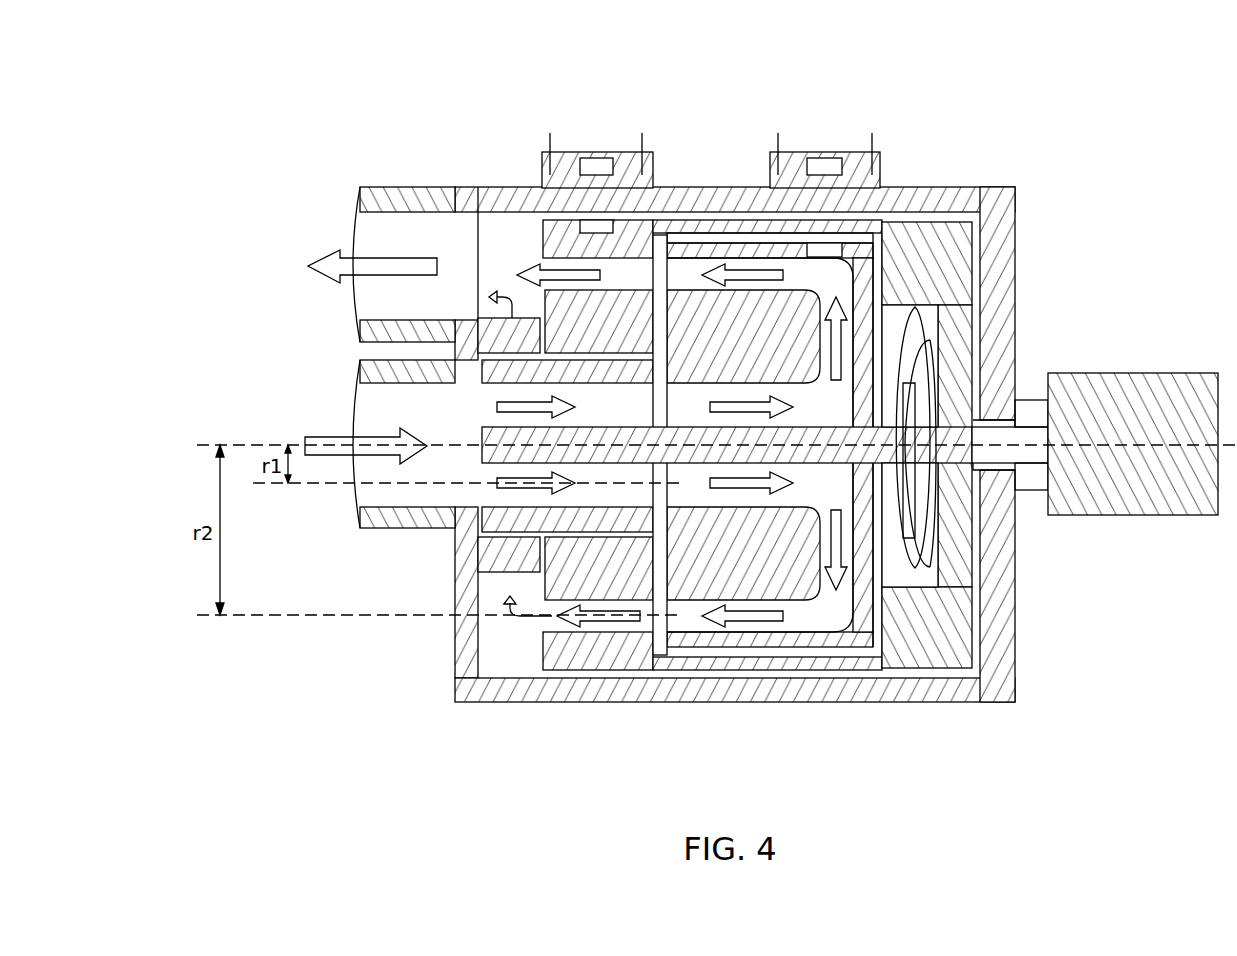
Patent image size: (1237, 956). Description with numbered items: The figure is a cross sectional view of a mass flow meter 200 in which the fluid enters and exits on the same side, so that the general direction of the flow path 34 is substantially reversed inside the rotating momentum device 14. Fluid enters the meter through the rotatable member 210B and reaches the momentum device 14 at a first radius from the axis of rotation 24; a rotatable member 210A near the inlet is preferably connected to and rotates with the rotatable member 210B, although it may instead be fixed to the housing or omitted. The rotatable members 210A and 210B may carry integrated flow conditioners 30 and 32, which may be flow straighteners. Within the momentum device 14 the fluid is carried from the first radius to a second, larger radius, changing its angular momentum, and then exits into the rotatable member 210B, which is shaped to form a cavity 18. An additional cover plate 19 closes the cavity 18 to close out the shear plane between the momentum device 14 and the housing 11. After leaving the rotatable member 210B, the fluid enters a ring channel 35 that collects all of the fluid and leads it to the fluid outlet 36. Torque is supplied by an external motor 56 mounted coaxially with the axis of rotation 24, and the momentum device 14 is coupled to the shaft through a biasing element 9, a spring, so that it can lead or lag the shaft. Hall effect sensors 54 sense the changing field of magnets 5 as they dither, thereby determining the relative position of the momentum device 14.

The mass flow meter 200 is at (982, 82).
The rotatable member 210B is at (558, 228).
The rotatable member 210A is at (505, 520).
The Hall effect sensor 54 is at (637, 157).
The magnet 5 is at (607, 223).
The cavity 18 is at (733, 237).
The housing 11 is at (978, 192).
The momentum device 14 is at (860, 257).
The cover plate 19 is at (997, 280).
The axis of rotation 24 is at (1030, 443).
The external motor 56 is at (1128, 520).
The biasing element 9 is at (897, 585).
The flow path 34 is at (702, 617).
The flow conditioner 32 is at (555, 625).
The flow conditioner 30 is at (502, 392).
The fluid outlet 36 is at (377, 228).
The ring channel 35 is at (508, 228).